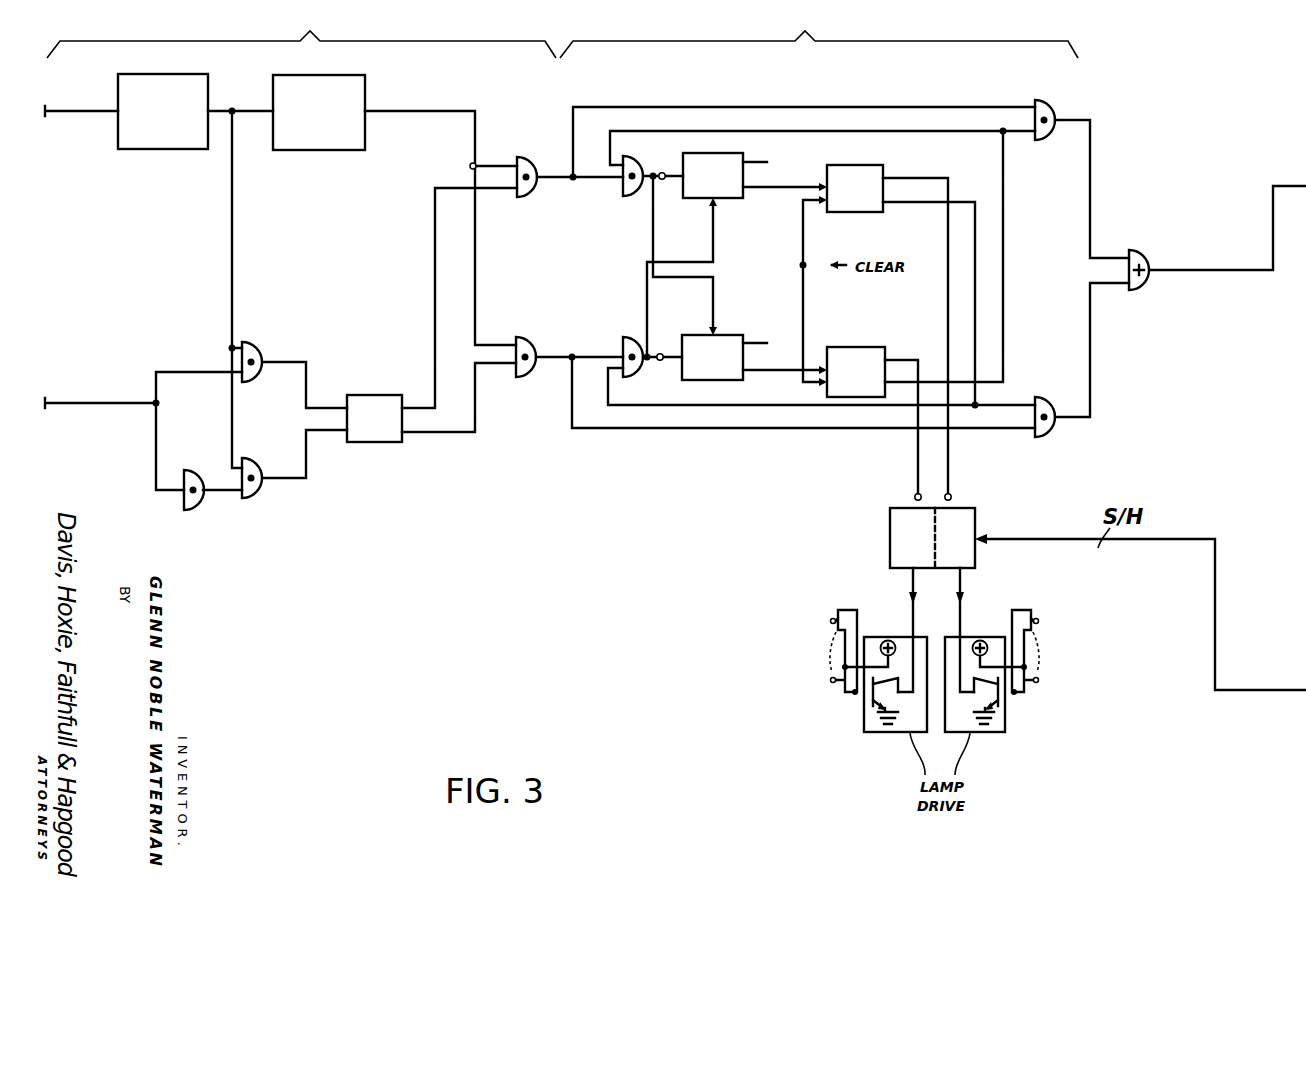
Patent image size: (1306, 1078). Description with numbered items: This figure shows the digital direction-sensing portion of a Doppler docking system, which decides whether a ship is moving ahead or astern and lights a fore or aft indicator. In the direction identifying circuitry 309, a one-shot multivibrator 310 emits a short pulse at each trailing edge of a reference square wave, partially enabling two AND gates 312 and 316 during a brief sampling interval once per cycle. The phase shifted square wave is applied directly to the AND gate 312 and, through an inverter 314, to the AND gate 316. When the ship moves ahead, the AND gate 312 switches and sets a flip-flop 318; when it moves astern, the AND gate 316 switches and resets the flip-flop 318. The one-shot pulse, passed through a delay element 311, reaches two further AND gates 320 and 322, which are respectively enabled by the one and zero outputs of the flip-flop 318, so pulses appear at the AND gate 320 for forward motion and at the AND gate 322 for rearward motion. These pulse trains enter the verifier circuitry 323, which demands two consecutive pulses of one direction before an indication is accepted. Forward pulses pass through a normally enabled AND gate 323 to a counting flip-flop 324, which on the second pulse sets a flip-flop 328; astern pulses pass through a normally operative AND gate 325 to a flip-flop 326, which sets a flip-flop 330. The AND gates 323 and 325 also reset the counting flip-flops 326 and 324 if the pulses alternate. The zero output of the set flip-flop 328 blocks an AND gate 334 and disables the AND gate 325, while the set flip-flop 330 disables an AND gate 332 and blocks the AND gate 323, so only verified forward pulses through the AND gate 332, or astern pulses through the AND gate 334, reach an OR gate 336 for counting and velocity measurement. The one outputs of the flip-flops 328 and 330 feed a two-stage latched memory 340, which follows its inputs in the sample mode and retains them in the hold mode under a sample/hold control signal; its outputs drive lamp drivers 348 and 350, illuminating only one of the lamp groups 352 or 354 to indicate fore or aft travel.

The direction identifying circuitry 309 is at (301, 33).
The one-shot multivibrator 310 is at (128, 150).
The delay element 311 is at (348, 151).
The AND gate 312 is at (256, 345).
The inverter 314 is at (190, 511).
The AND gate 316 is at (254, 498).
The flip-flop 318 is at (392, 384).
The AND gate 320 is at (540, 141).
The AND gate 322 is at (521, 378).
The verifier and direction designating circuitry / AND gate 323 is at (615, 214).
The flip-flop 324 is at (705, 199).
The AND gate 325 is at (640, 338).
The flip-flop 326 is at (690, 334).
The flip-flop 328 is at (875, 212).
The flip-flop 330 is at (885, 337).
The AND gate 332 is at (1050, 104).
The AND gate 334 is at (1048, 437).
The OR gate 336 is at (1140, 290).
The latched memory 340 is at (975, 522).
The lamp driver 348 is at (878, 733).
The lamp driver 350 is at (1005, 725).
The lamp group 352 is at (832, 618).
The lamp group 354 is at (1063, 620).